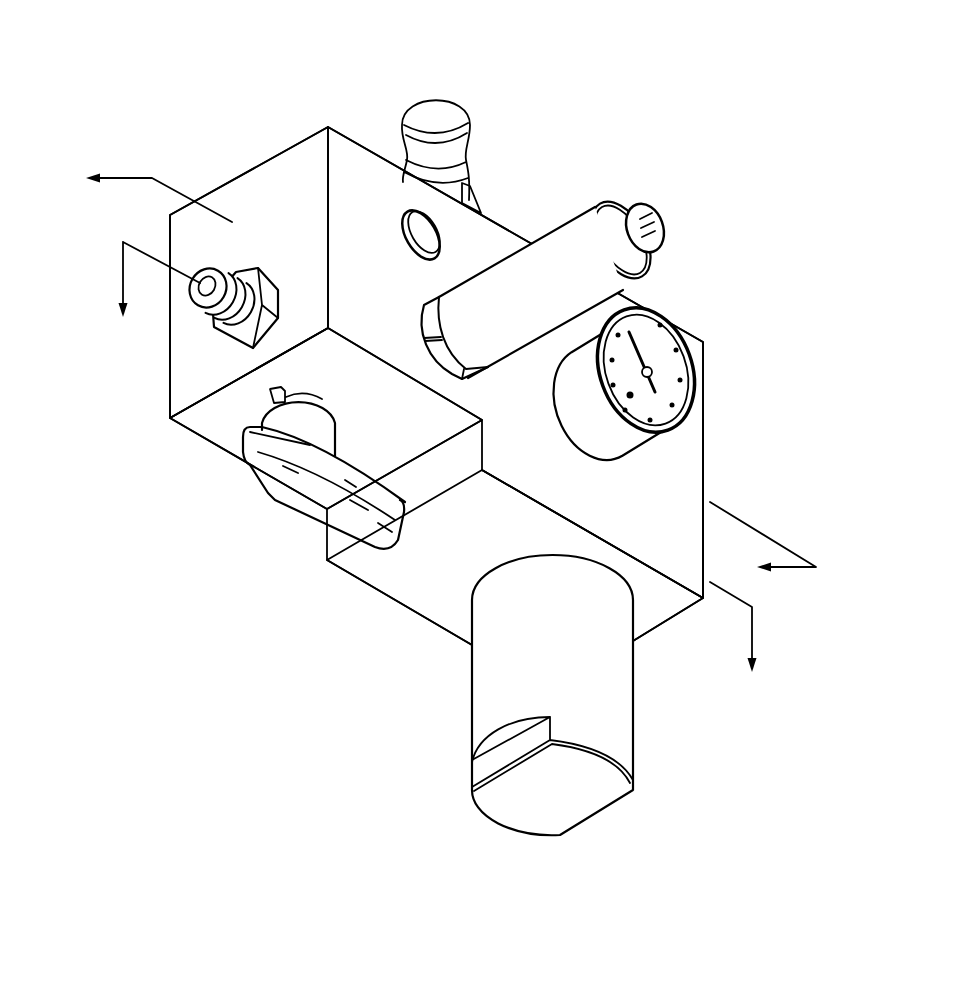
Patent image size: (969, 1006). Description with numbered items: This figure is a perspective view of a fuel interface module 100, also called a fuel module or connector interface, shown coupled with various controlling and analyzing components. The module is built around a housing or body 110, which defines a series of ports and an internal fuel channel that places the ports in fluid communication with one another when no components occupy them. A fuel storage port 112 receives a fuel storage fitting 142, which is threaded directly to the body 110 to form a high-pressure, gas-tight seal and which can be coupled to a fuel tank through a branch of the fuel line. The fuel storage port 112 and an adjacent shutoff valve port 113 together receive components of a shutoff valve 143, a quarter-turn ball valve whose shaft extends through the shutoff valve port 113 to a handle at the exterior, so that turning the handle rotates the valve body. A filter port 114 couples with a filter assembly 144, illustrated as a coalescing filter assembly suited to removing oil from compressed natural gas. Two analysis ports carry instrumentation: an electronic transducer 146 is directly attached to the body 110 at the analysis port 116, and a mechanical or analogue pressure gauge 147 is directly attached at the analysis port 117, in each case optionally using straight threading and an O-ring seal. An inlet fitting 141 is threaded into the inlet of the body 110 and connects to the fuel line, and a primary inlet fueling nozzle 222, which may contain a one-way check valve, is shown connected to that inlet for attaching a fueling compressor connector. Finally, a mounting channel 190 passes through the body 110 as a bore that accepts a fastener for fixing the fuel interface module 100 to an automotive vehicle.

The fuel interface module 100 is at (156, 60).
The body 110 is at (353, 167).
The fuel storage port 112 is at (208, 372).
The shutoff valve port 113 is at (243, 401).
The filter port 114 is at (452, 610).
The analysis port 116 is at (472, 268).
The analysis port 117 is at (568, 466).
The inlet fitting 141 is at (480, 203).
The fuel storage fitting 142 is at (217, 332).
The shutoff valve 143 is at (243, 498).
The filter assembly 144 is at (446, 773).
The electronic transducer 146 is at (571, 247).
The pressure gauge 147 is at (668, 360).
The mounting channel 190 is at (390, 234).
The primary inlet fueling nozzle 222 is at (452, 110).